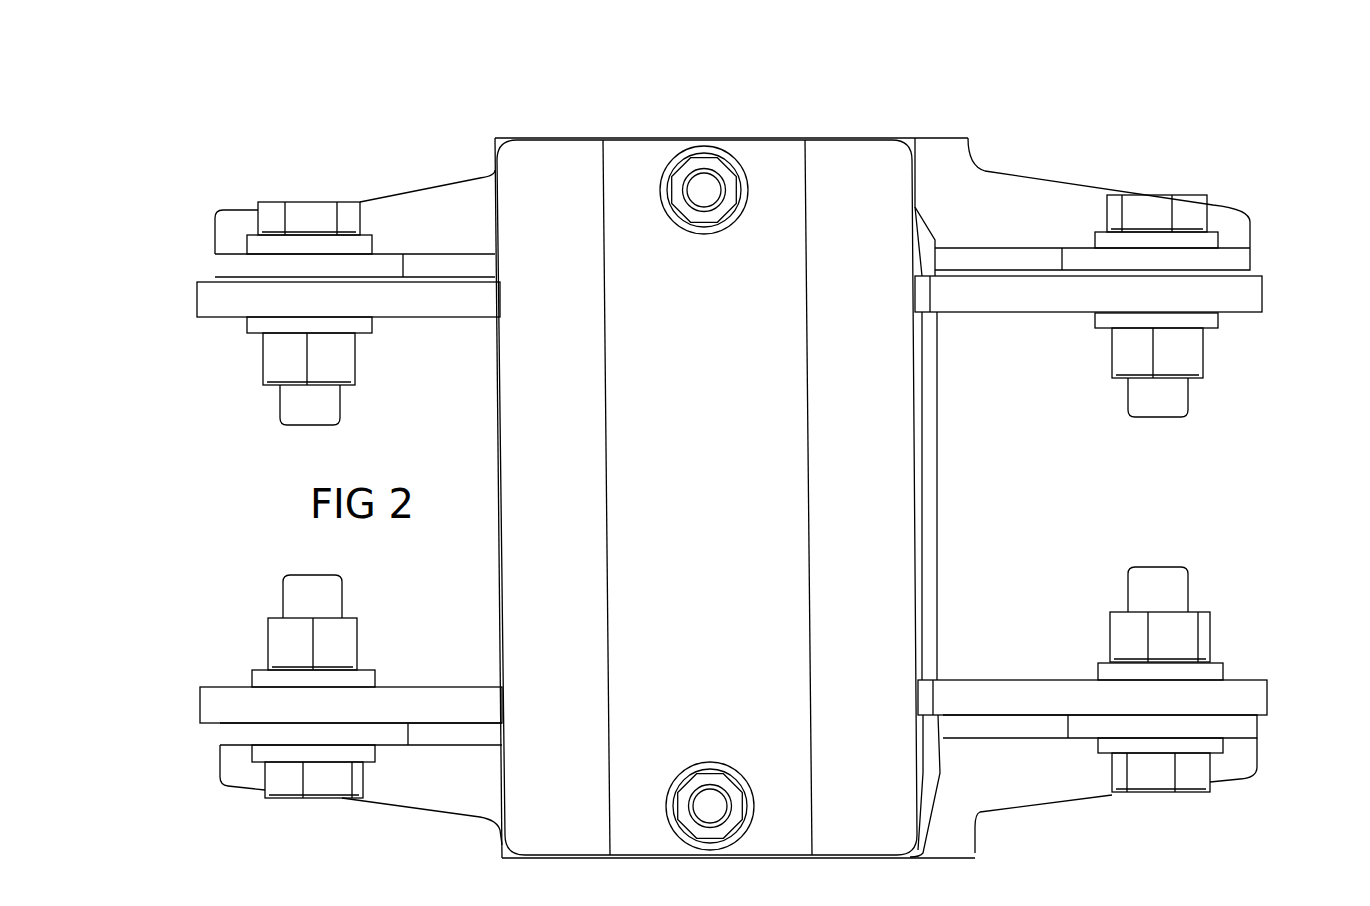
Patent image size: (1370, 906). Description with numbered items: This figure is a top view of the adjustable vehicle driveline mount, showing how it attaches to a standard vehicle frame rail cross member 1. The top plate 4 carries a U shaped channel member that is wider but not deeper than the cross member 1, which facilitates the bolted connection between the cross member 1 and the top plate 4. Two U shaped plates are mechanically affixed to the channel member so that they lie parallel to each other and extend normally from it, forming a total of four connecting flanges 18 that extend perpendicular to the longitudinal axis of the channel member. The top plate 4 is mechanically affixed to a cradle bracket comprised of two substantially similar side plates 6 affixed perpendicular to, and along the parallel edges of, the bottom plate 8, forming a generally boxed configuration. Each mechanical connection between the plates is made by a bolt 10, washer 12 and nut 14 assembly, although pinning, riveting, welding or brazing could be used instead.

The frame rail cross member 1 is at (770, 148).
The top plate 4 is at (917, 188).
The side plate 6 is at (1232, 722).
The bottom plate 8 is at (1045, 788).
The bolt 10 is at (708, 192).
The washer 12 is at (677, 158).
The nut 14 is at (705, 165).
The connecting flange 18 is at (1257, 287).